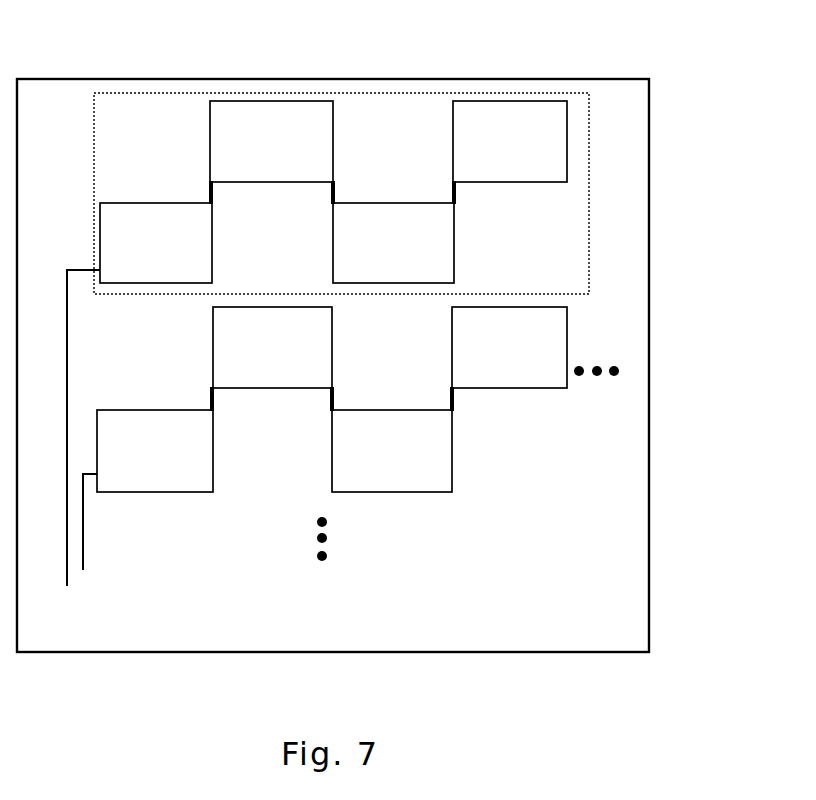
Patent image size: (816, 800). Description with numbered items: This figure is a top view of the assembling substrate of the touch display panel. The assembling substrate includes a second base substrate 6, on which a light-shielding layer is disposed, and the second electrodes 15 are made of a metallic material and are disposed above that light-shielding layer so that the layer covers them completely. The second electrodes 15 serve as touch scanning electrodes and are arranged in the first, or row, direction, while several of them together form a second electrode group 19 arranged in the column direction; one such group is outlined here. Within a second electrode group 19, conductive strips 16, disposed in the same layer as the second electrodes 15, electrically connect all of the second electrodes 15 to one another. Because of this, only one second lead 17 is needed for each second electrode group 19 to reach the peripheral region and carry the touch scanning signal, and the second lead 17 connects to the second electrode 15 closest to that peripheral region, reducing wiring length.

The second base substrate 6 is at (636, 331).
The second electrode 15 is at (278, 100).
The conductive strip 16 is at (466, 192).
The second lead 17 is at (86, 255).
The second electrode group 19 is at (603, 130).